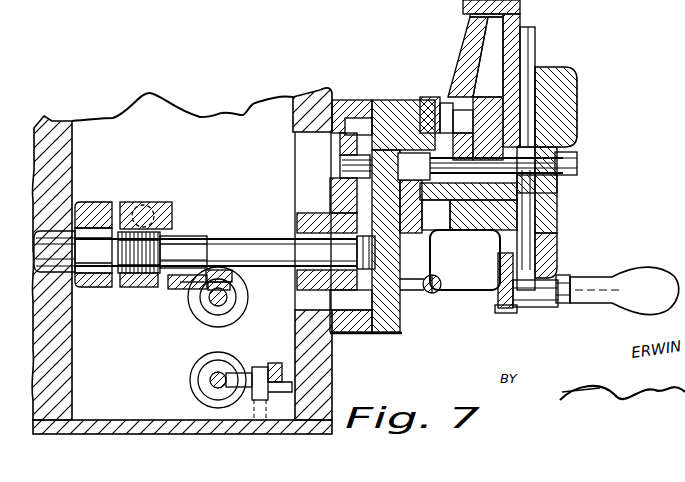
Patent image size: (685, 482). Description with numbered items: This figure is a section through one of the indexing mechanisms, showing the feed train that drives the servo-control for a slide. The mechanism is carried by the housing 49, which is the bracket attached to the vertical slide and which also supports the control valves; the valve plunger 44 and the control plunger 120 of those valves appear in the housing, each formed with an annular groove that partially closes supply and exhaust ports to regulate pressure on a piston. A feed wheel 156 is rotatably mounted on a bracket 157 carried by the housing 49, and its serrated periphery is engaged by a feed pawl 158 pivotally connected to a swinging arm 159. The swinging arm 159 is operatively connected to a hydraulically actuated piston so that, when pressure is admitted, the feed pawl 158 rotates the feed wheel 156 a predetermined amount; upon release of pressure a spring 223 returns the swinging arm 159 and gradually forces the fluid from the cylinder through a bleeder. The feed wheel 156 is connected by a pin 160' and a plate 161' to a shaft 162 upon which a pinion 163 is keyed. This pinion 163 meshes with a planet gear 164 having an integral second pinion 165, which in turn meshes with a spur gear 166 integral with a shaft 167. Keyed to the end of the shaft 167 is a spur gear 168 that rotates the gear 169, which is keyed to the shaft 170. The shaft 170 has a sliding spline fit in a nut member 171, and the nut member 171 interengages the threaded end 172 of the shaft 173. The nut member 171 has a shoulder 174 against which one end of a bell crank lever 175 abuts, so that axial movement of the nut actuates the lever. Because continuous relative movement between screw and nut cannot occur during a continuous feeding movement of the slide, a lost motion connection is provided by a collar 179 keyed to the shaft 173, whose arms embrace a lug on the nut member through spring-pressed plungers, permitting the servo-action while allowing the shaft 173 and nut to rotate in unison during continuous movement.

The valve plunger 44 is at (235, 300).
The bracket 49 is at (330, 375).
The control plunger 120 is at (210, 379).
The feed wheel 156 is at (510, 275).
The bracket 157 is at (400, 268).
The feed pawl 158 is at (510, 12).
The swinging arm 159 is at (458, 58).
The pin 160' is at (596, 305).
The plate 161' is at (572, 255).
The shaft 162 is at (568, 158).
The pinion 163 is at (545, 215).
The planet gear 164 is at (538, 78).
The second pinion 165 is at (463, 100).
The spur gear 166 is at (458, 230).
The shaft 167 is at (383, 160).
The spur gear 168 is at (347, 128).
The gear 169 is at (348, 296).
The shaft 170 is at (268, 248).
The nut member 171 is at (183, 232).
The threaded end 172 is at (133, 285).
The shaft 173 is at (52, 245).
The shoulder 174 is at (157, 285).
The bell crank lever 175 is at (187, 285).
The collar 179 is at (90, 287).
The spring 223 is at (437, 290).